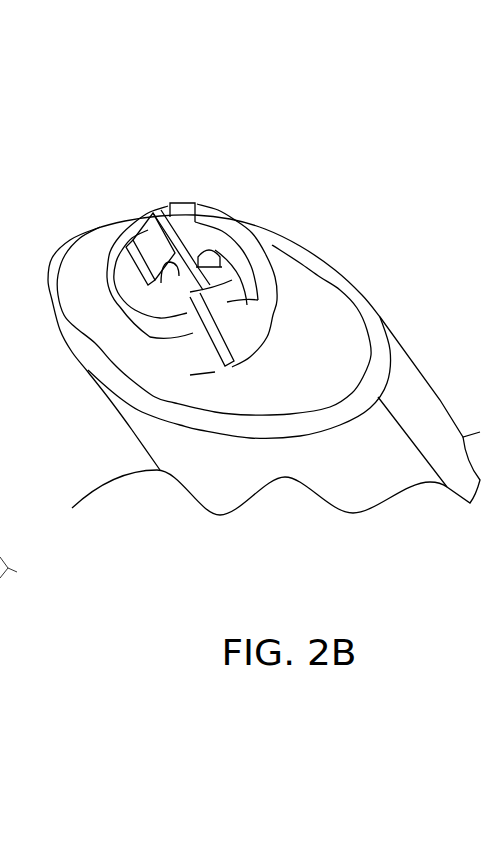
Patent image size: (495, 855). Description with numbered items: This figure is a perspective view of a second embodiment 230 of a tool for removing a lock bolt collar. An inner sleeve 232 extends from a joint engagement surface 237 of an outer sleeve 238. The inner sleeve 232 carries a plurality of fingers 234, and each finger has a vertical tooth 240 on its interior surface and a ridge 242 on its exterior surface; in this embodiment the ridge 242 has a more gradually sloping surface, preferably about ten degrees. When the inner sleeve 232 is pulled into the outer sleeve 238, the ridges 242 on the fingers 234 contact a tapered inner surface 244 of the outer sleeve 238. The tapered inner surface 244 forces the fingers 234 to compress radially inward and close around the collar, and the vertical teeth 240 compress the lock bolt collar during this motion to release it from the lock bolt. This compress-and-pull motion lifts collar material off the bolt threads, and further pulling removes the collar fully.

The second embodiment 230 is at (307, 135).
The inner sleeve 232 is at (183, 203).
The fingers 234 is at (145, 220).
The joint engagement surface 237 is at (88, 265).
The outer sleeve 238 is at (295, 335).
The vertical tooth 240 is at (194, 227).
The ridge 242 is at (246, 297).
The tapered inner surface 244 is at (202, 372).